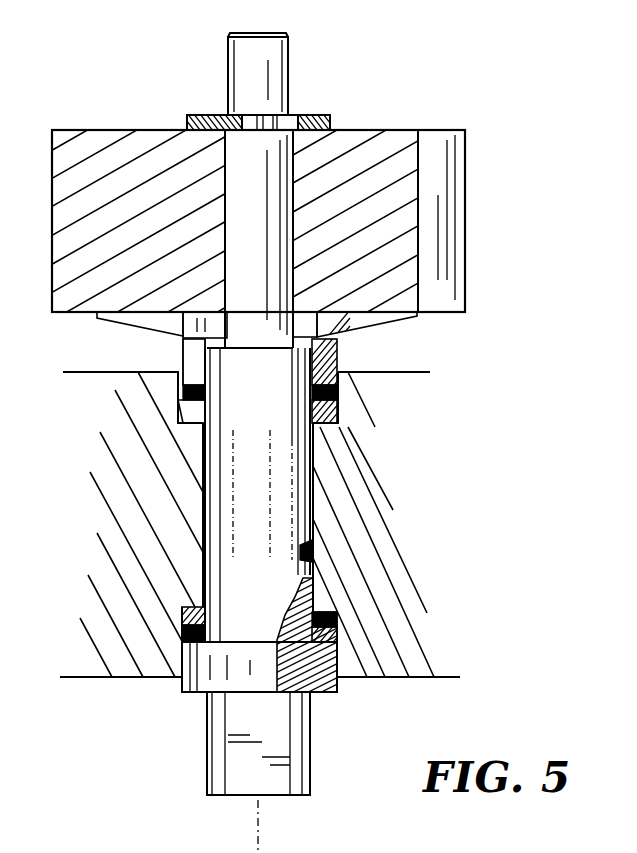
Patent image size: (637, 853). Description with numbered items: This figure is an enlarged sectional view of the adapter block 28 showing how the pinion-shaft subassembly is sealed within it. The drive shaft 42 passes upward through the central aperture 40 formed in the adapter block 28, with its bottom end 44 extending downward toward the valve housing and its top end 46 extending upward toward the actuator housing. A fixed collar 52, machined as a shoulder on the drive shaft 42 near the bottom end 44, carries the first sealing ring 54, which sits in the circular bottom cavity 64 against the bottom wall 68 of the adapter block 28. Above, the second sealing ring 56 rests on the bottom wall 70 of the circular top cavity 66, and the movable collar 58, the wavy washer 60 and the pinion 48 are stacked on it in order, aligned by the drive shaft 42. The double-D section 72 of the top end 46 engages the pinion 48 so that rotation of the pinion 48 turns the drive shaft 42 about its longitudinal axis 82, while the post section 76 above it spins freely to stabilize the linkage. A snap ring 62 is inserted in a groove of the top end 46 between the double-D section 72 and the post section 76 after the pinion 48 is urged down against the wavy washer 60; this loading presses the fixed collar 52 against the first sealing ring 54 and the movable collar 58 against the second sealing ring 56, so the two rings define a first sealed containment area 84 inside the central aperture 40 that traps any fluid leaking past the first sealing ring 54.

The adapter block 28 is at (400, 646).
The central aperture 40 is at (302, 452).
The drive shaft 42 is at (278, 510).
The bottom end 44 is at (322, 752).
The top end 46 is at (322, 90).
The pinion 48 is at (63, 246).
The fixed collar 52 is at (200, 688).
The first sealing ring 54 is at (178, 623).
The second sealing ring 56 is at (186, 426).
The movable collar 58 is at (183, 336).
The wavy washer 60 is at (97, 314).
The snap ring 62 is at (212, 115).
The circular bottom cavity 64 is at (330, 603).
The circular top cavity 66 is at (183, 362).
The bottom wall of the circular bottom cavity 68 is at (207, 617).
The bottom wall of the circular top cavity 70 is at (335, 405).
The double-D section 72 is at (245, 183).
The post section 76 is at (268, 58).
The longitudinal axis 82 is at (262, 843).
The first sealed containment area 84 is at (310, 573).